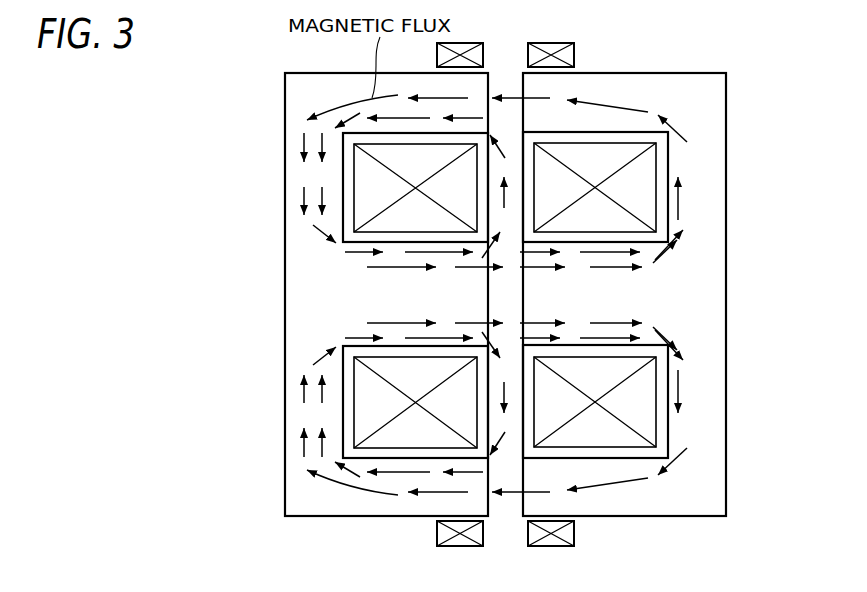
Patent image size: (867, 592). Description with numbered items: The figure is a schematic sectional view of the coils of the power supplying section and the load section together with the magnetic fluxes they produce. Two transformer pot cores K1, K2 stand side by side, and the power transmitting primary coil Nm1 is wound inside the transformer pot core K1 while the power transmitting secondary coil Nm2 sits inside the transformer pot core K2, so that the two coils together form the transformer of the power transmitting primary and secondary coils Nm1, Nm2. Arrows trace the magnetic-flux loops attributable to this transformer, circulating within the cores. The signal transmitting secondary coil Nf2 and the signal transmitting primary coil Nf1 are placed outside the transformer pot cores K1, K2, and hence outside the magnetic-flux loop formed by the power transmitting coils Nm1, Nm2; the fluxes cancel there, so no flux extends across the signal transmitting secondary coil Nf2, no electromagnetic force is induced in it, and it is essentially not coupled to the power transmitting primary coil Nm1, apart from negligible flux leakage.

The transformer pot core K1 is at (285, 89).
The transformer pot core K2 is at (727, 87).
The power transmitting primary coil Nm1 is at (352, 382).
The power transmitting secondary coil Nm2 is at (658, 380).
The signal transmitting primary coil Nf1 is at (551, 308).
The signal transmitting secondary coil Nf2 is at (460, 308).